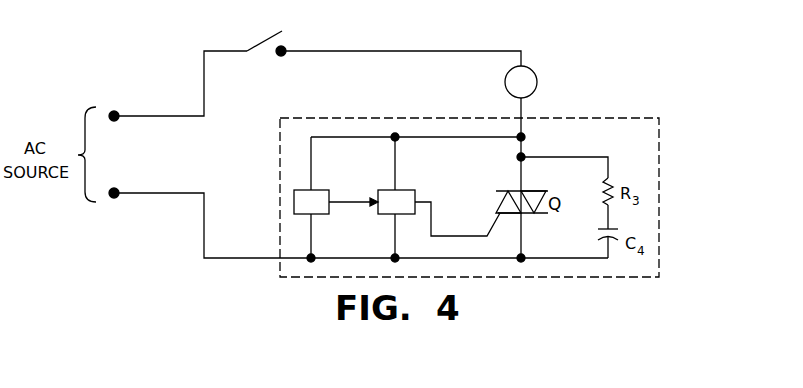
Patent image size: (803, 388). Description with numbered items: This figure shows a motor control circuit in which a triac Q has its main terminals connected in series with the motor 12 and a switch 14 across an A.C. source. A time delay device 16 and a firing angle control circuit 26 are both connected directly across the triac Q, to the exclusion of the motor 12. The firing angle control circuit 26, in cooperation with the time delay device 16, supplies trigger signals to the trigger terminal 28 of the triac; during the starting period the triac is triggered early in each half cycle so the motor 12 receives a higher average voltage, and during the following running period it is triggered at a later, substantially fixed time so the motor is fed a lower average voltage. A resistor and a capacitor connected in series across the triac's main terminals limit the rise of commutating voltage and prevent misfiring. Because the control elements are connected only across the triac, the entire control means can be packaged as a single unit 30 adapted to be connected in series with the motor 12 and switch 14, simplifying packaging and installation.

The motor 12 is at (527, 68).
The switch 14 is at (268, 36).
The time delay device 16 is at (314, 190).
The firing angle control circuit 26 is at (404, 190).
The trigger terminal 28 is at (495, 233).
The single unit 30 is at (583, 118).